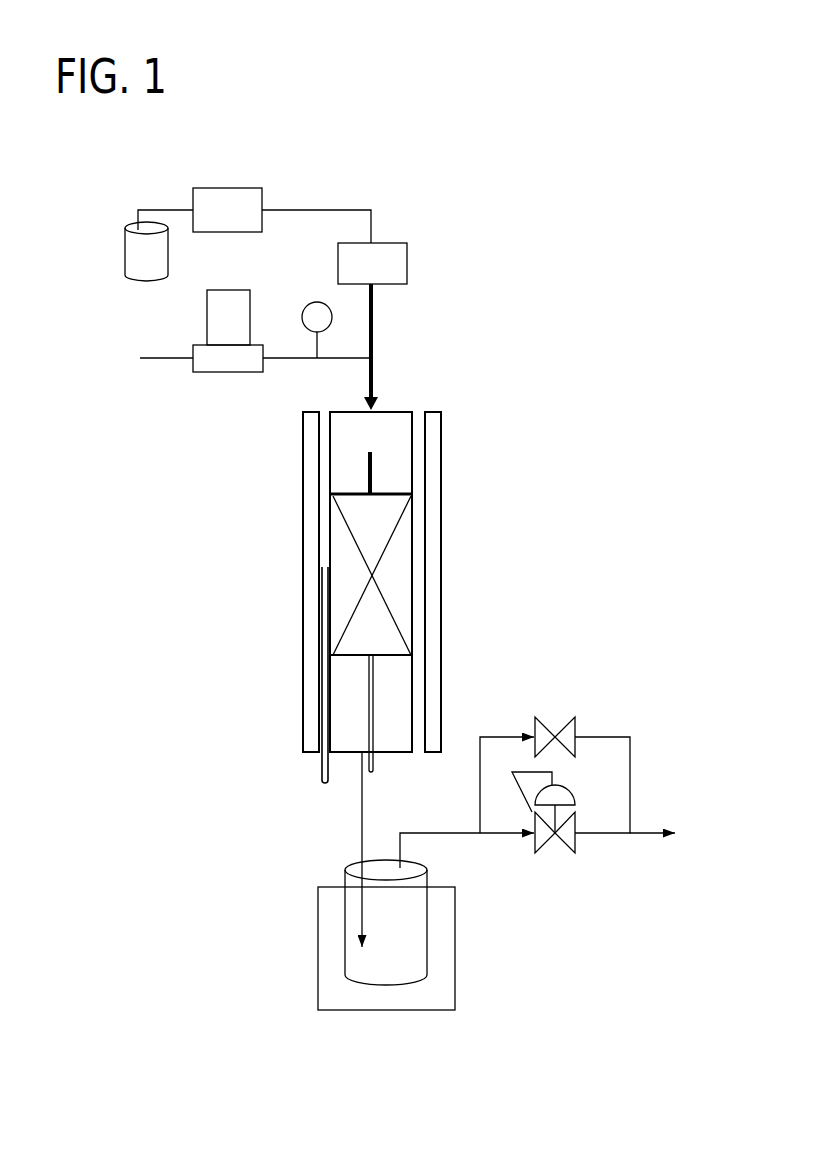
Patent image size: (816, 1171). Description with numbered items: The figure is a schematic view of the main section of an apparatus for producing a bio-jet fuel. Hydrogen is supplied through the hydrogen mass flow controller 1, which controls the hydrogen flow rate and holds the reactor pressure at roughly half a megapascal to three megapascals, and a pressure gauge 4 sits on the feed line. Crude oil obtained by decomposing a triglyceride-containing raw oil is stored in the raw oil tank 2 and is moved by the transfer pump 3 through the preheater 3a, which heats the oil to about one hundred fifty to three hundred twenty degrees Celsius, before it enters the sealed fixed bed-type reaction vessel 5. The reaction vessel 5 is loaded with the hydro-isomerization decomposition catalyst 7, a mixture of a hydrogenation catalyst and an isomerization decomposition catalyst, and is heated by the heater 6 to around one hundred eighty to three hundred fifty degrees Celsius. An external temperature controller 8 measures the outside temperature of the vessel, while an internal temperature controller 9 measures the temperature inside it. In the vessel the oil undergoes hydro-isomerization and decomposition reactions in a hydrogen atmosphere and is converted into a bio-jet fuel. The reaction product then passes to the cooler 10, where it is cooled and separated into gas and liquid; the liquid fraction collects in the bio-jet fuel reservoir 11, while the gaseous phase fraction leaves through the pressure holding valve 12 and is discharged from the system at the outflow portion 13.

The hydrogen mass flow controller 1 is at (192, 387).
The raw oil tank 2 is at (125, 207).
The transfer pump 3 is at (249, 177).
The preheater 3a is at (411, 258).
The pressure gauge 4 is at (310, 297).
The fixed bed-type reaction vessel 5 is at (407, 400).
The heater 6 is at (455, 490).
The hydro-isomerization decomposition catalyst 7 is at (397, 585).
The external temperature controller 8 is at (313, 777).
The internal temperature controller 9 is at (370, 781).
The cooler 10 is at (317, 933).
The bio-jet fuel reservoir 11 is at (428, 953).
The pressure holding valve 12 is at (577, 860).
The outflow portion 13 is at (647, 836).